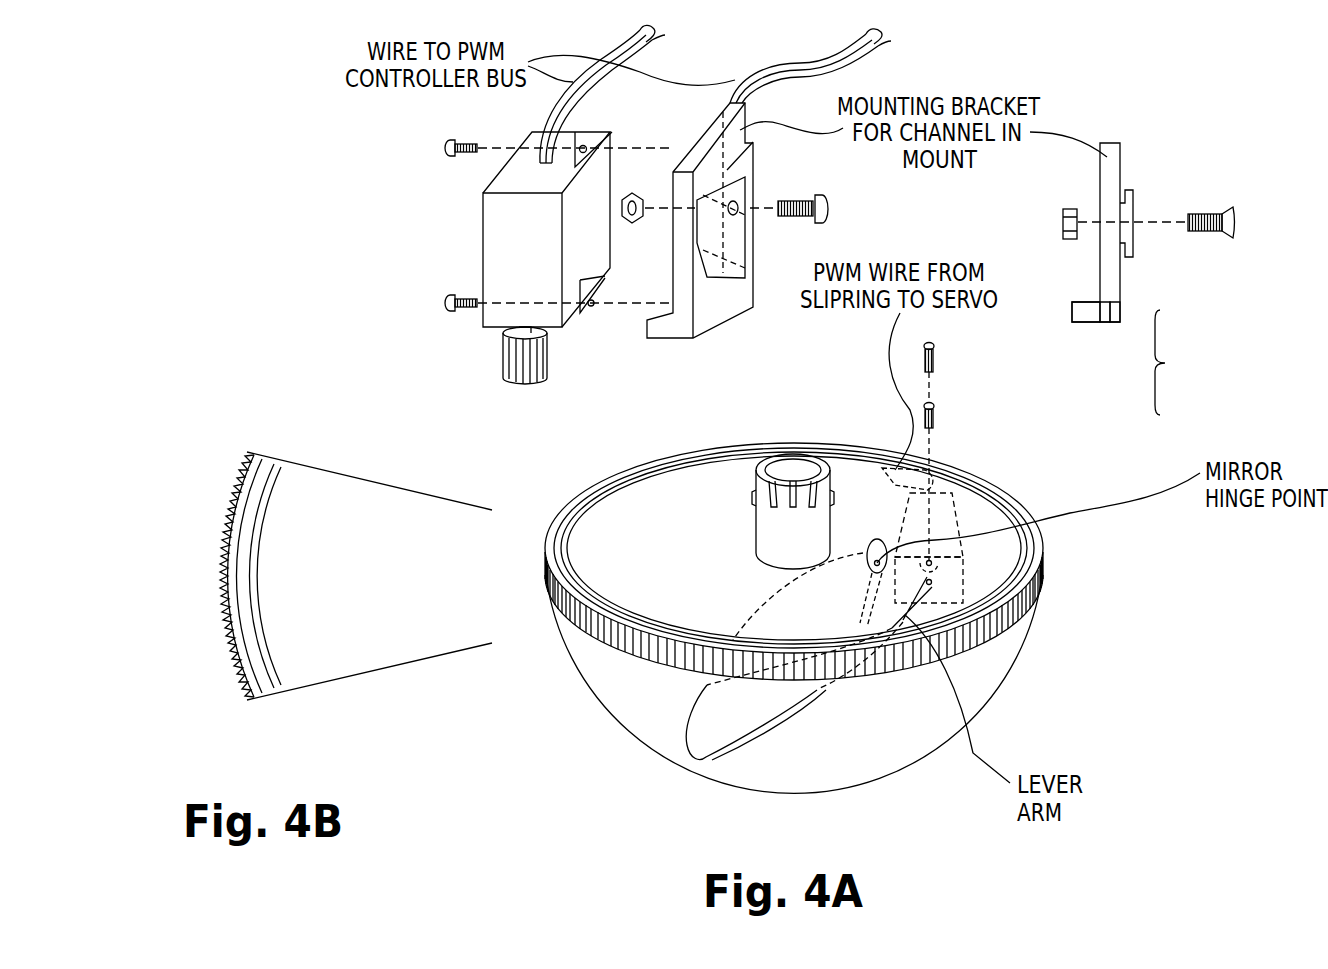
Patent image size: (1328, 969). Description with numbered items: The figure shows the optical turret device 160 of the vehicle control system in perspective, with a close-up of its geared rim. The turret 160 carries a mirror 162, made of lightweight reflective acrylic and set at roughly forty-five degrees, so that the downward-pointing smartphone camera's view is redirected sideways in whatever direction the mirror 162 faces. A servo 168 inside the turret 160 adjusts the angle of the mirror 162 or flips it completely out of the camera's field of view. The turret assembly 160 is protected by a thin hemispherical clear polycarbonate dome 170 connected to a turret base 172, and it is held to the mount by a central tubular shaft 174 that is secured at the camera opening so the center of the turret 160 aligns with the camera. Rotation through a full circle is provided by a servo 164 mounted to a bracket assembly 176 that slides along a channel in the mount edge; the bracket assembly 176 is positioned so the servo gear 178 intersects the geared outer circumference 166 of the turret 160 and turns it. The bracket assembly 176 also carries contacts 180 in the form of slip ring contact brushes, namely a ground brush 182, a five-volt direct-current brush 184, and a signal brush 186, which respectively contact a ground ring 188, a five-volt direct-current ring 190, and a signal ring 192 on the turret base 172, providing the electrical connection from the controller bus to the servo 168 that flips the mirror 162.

In FIG. 4A, the optical turret device 160 is at (920, 634).
In FIG. 4A, the mirror 162 is at (757, 715).
In FIG. 4A, the servo 164 is at (510, 233).
In FIG. 4A, the geared outer circumference 166 is at (1035, 550).
In FIG. 4B, the geared outer circumference 166 is at (248, 700).
In FIG. 4A, the servo 168 is at (930, 580).
In FIG. 4A, the hemispherical clear polycarbonate dome 170 is at (602, 763).
In FIG. 4A, the turret base 172 is at (668, 530).
In FIG. 4A, the central tubular shaft 174 is at (792, 468).
In FIG. 4A, the bracket assembly 176 is at (673, 341).
In FIG. 4A, the servo gear 178 is at (503, 356).
In FIG. 4A, the contacts 180 is at (1177, 362).
In FIG. 4A, the ground brush 182 is at (1077, 322).
In FIG. 4A, the 5V DC brush 184 is at (1088, 322).
In FIG. 4A, the signal brush 186 is at (1092, 322).
In FIG. 4B, the ground ring 188 is at (267, 702).
In FIG. 4B, the 5V DC ring 190 is at (278, 702).
In FIG. 4B, the signal ring 192 is at (287, 702).